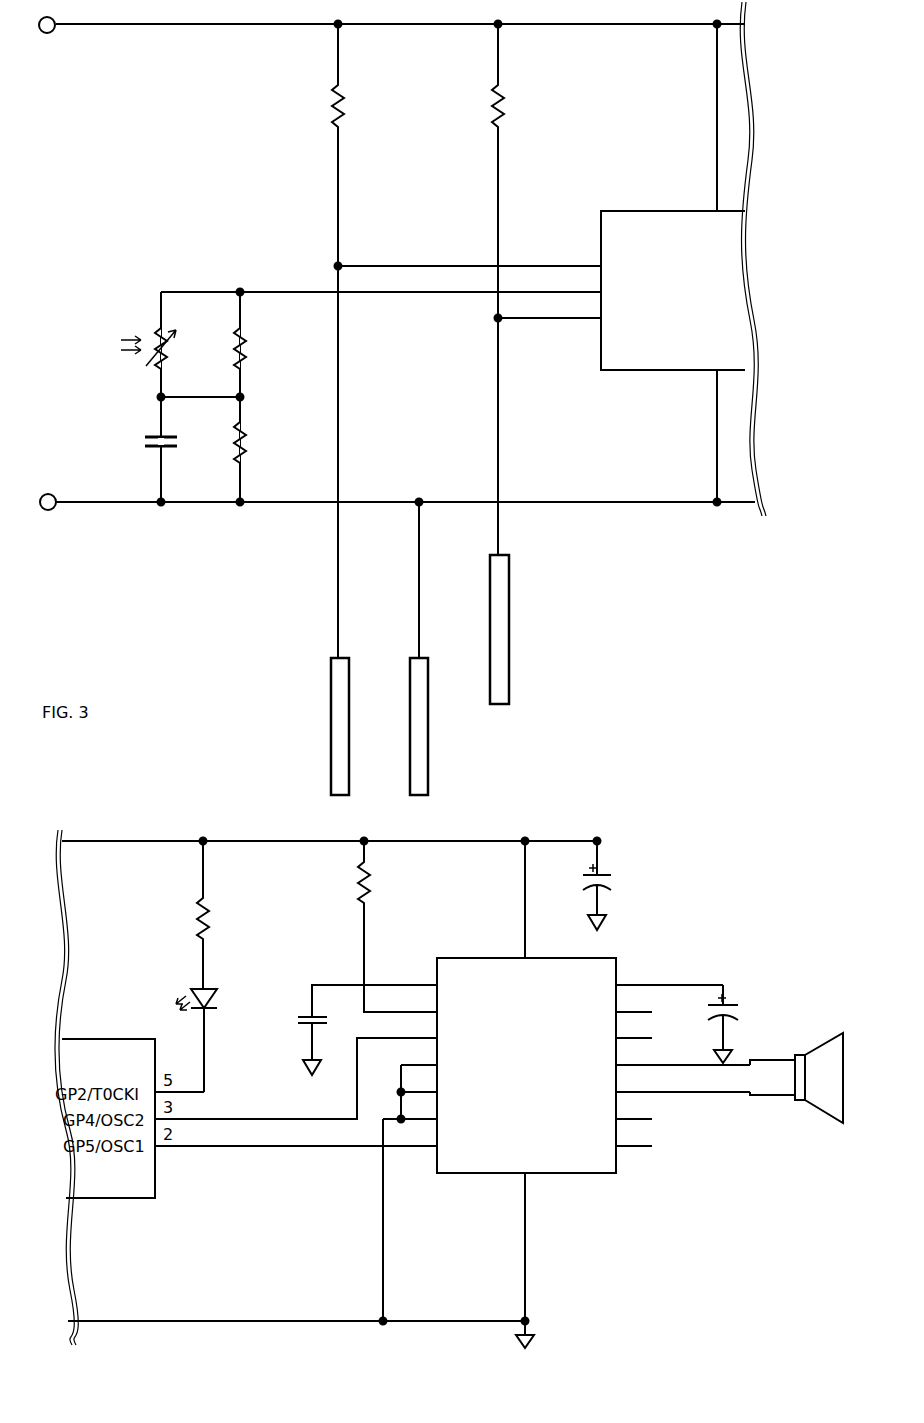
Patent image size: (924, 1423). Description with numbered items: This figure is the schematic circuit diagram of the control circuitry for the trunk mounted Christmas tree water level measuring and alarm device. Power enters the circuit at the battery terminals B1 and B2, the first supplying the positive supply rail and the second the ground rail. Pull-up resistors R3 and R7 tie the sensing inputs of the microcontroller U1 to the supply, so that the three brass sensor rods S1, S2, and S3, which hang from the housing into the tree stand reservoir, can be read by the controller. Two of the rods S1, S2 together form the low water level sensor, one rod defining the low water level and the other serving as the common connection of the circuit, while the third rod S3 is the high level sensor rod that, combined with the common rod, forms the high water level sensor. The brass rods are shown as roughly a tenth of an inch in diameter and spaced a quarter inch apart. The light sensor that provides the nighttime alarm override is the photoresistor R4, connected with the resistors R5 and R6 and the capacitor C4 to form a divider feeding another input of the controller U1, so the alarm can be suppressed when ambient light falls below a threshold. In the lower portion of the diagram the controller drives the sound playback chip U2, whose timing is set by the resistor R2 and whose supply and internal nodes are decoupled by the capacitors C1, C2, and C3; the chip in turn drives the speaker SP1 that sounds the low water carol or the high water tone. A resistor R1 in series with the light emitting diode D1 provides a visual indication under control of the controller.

The battery terminal +3V B1 is at (58, 26).
The battery terminal GND B2 is at (52, 502).
The resistor 1M R3 is at (352, 340).
The resistor 1M R7 is at (512, 288).
The microcontroller PIC12F509 U1 is at (453, 263).
The CDS photoresistor R4 is at (164, 349).
The resistor 470K R5 is at (264, 347).
The resistor 4.7M R6 is at (262, 444).
The capacitor 0.1 C4 is at (167, 446).
The low water level sensor rod S1 is at (328, 715).
The common sensor rod S2 is at (442, 647).
The high level sensor rod S3 is at (603, 621).
The resistor 100 R1 is at (222, 915).
The LED D1 is at (214, 1040).
The resistor 270K ROSC R2 is at (420, 926).
The capacitor 0.1 C3 is at (367, 1030).
The capacitor 4.7UF C1 is at (616, 885).
The sound chip AP89XXA U2 is at (565, 1094).
The capacitor 1UF C2 is at (733, 1023).
The speaker 16 OHM SP1 is at (796, 1081).